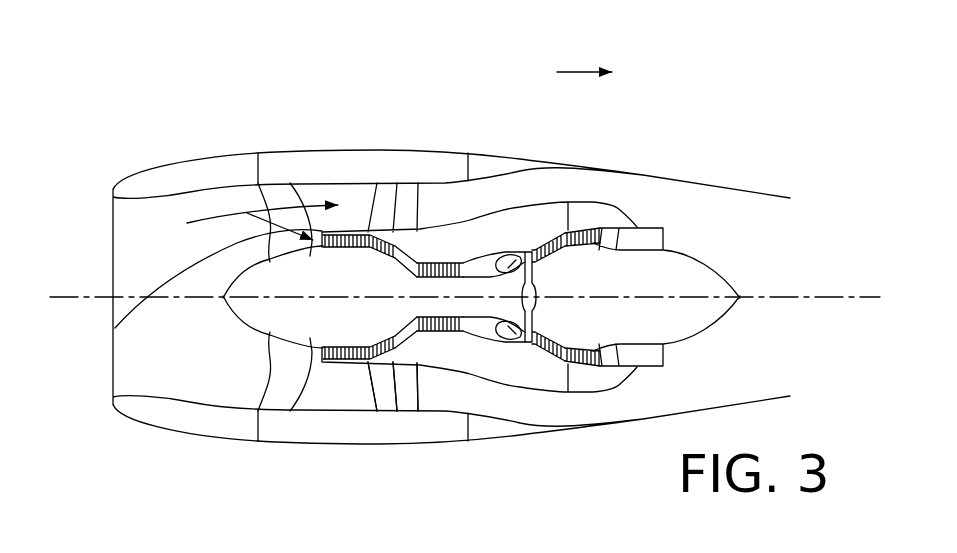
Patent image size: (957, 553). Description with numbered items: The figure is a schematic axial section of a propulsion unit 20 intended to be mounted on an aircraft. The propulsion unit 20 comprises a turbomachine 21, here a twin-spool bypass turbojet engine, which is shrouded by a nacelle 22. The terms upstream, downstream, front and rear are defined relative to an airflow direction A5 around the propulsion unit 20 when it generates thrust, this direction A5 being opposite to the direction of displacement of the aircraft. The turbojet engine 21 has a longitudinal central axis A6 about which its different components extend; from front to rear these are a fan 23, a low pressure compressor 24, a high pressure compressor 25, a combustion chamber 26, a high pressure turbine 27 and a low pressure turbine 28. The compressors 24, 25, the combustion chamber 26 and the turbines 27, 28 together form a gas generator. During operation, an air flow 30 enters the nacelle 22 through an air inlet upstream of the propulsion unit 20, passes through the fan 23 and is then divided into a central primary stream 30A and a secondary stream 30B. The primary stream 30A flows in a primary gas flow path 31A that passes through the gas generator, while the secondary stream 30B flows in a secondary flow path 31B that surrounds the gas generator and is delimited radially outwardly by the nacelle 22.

The propulsion unit 20 is at (263, 113).
The turbomachine 21 is at (688, 233).
The nacelle 22 is at (351, 230).
The fan 23 is at (280, 363).
The low pressure compressor 24 is at (376, 185).
The high pressure compressor 25 is at (450, 262).
The combustion chamber 26 is at (507, 252).
The high pressure turbine 27 is at (551, 231).
The low pressure turbine 28 is at (596, 227).
The air flow 30 is at (210, 217).
The primary stream 30A is at (117, 327).
The secondary stream 30B is at (290, 183).
The primary gas flow path 31A is at (410, 333).
The secondary flow path 31B is at (517, 407).
The airflow direction A5 is at (585, 71).
The longitudinal central axis A6 is at (65, 297).